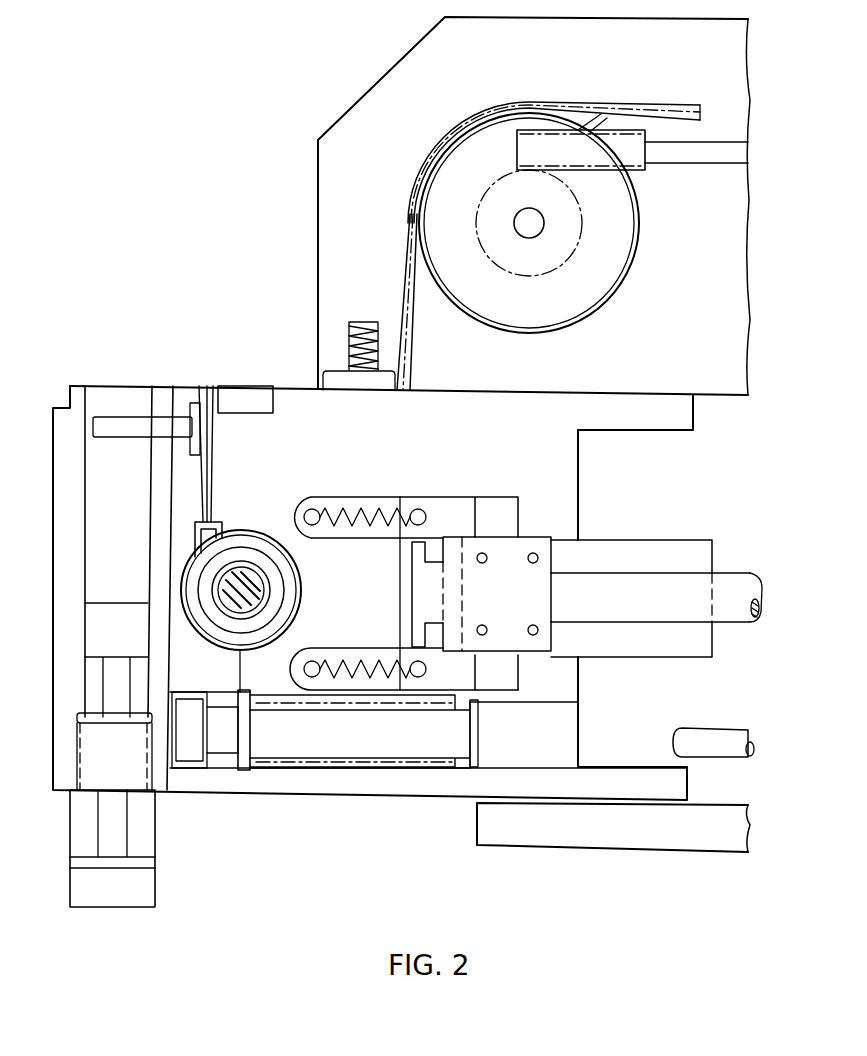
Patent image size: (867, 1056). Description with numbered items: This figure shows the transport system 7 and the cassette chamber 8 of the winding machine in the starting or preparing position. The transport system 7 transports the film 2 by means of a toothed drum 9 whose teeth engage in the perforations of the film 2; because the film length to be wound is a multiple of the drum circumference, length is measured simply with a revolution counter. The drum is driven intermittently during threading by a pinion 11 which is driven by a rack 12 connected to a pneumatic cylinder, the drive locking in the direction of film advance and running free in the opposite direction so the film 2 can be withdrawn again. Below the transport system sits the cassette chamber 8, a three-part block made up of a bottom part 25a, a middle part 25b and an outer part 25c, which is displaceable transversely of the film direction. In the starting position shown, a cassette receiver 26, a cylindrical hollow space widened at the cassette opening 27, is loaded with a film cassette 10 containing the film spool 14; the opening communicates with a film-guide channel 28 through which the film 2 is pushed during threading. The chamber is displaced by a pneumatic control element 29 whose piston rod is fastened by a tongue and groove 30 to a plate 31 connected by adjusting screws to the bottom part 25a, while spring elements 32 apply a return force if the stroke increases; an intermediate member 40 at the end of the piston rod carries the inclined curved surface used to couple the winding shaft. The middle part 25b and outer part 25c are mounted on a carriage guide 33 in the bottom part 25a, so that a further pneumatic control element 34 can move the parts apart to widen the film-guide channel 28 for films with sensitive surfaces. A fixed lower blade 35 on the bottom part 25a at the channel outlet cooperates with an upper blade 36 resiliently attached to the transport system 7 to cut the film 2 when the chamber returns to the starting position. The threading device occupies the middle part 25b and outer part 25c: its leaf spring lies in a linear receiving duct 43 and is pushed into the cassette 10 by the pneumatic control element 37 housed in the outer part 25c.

The film 2 is at (641, 108).
The transport system 7 is at (406, 44).
The cassette chamber 8 is at (153, 372).
The toothed drum 9 is at (441, 170).
The film cassette 10 is at (272, 532).
The pinion 11 is at (582, 222).
The rack 12 is at (648, 170).
The film spool 14 is at (265, 578).
The bottom part 25a is at (298, 783).
The middle part 25b is at (213, 783).
The outer part 25c is at (90, 415).
The cassette receiver 26 is at (297, 603).
The cassette opening 27 is at (216, 525).
The film-guide channel 28 is at (408, 280).
The pneumatic control element 29 is at (735, 583).
The tongue and groove 30 is at (415, 572).
The plate 31 is at (446, 505).
The spring elements 32 is at (338, 512).
The carriage guide 33 is at (355, 745).
The pneumatic control element 34 is at (738, 742).
The fixed lower blade 35 is at (248, 395).
The upper blade 36 is at (330, 376).
The control element 37 is at (148, 832).
The intermediate member 40 is at (520, 556).
The receiving duct 43 is at (203, 388).